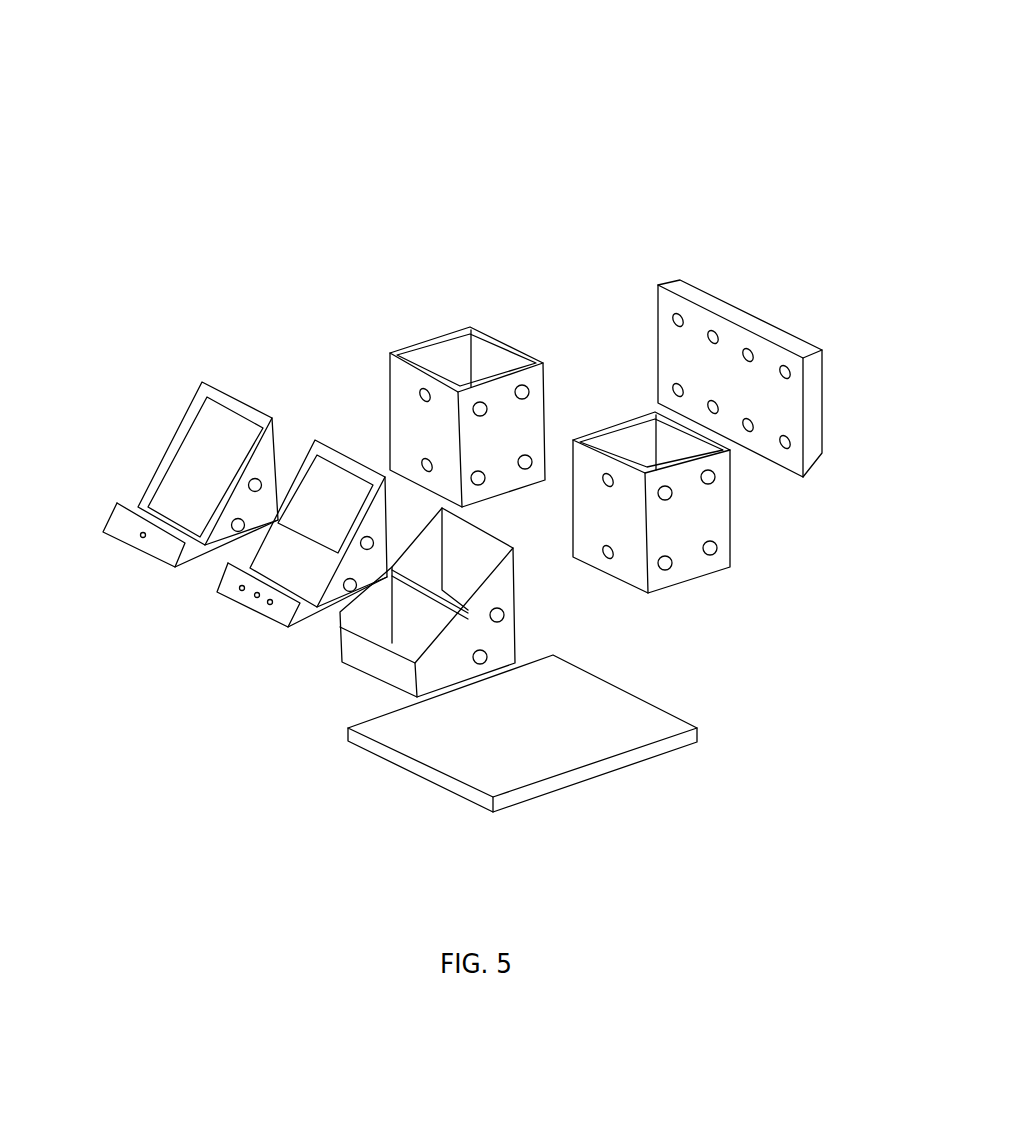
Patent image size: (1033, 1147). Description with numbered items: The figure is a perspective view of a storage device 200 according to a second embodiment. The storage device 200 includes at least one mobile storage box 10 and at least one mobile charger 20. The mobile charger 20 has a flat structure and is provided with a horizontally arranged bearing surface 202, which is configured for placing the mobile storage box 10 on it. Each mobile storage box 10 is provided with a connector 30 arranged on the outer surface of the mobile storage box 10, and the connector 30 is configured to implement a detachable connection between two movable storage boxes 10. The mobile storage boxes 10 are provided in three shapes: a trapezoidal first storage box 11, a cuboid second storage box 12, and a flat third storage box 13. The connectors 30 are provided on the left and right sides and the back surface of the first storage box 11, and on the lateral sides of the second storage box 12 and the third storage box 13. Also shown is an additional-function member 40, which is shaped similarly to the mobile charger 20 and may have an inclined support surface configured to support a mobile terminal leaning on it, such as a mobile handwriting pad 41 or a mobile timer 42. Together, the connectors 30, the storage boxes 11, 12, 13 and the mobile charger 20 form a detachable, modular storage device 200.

The storage device 200 is at (33, 48).
The connector 30 is at (531, 391).
The mobile storage box 10 is at (907, 525).
The third storage box 13 is at (803, 468).
The second storage box 12 is at (733, 548).
The first storage box 11 is at (507, 630).
The additional-function member 40 is at (75, 761).
The mobile handwriting pad 41 is at (140, 540).
The mobile timer 42 is at (263, 610).
The mobile charger 20 is at (577, 787).
The bearing surface 202 is at (470, 738).